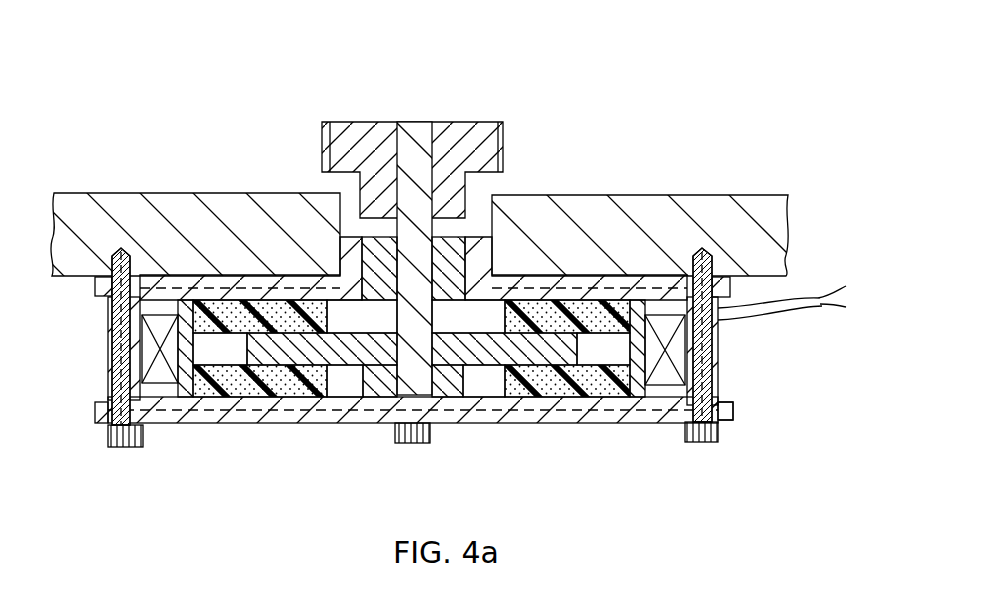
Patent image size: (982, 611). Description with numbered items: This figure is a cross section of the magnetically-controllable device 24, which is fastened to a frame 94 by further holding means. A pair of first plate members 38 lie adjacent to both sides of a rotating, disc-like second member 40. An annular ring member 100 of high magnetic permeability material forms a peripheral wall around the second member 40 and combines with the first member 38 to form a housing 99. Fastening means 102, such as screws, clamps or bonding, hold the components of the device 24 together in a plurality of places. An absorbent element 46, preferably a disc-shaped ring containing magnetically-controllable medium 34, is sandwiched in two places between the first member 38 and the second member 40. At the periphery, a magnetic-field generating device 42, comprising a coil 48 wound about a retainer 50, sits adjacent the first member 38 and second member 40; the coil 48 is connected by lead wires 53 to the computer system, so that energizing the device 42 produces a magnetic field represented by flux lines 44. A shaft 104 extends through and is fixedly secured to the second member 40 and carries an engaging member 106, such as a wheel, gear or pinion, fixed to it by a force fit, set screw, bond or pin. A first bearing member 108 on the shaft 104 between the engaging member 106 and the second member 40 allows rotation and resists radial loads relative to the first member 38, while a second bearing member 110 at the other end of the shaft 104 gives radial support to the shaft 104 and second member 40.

The magnetically-controllable device 24 is at (199, 104).
The frame 94 is at (176, 200).
The first plate member 38 is at (95, 290).
The engaging member 106 is at (346, 122).
The shaft 104 is at (413, 125).
The first bearing member 108 is at (458, 237).
The absorbent element 46 is at (230, 300).
The magnetically-controllable medium 34 is at (274, 294).
The second member 40 is at (487, 355).
The second bearing member 110 is at (380, 390).
The magnetic-field generating device 42 is at (140, 342).
The coil 48 is at (660, 352).
The annular ring member 100 is at (718, 377).
The fastening means 102 is at (110, 448).
The retainer 50 is at (668, 422).
The lead wires 53 is at (798, 293).
The housing 99 is at (737, 421).
The flux lines 44 is at (610, 423).